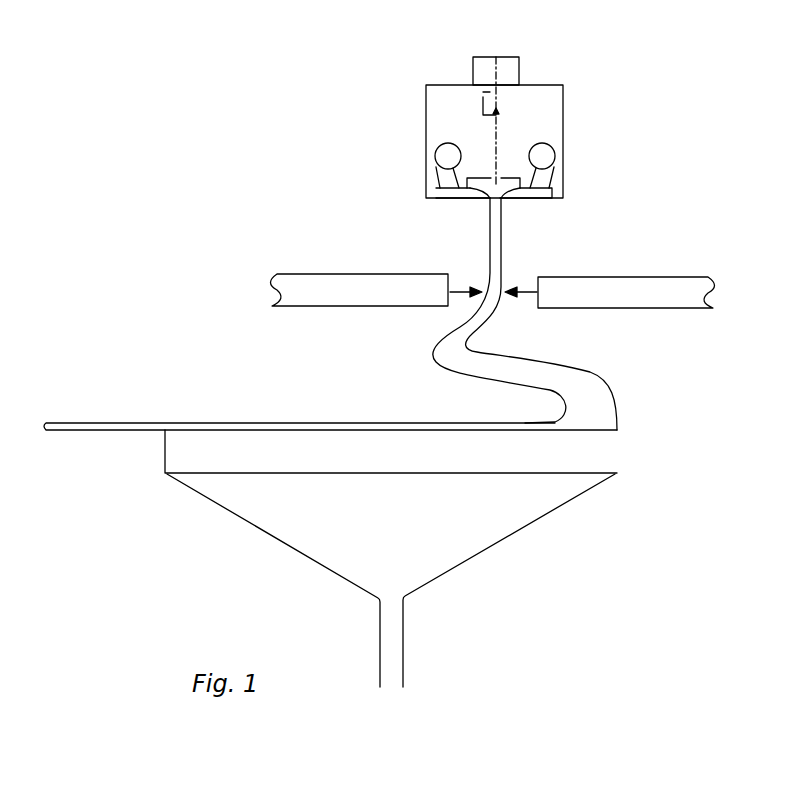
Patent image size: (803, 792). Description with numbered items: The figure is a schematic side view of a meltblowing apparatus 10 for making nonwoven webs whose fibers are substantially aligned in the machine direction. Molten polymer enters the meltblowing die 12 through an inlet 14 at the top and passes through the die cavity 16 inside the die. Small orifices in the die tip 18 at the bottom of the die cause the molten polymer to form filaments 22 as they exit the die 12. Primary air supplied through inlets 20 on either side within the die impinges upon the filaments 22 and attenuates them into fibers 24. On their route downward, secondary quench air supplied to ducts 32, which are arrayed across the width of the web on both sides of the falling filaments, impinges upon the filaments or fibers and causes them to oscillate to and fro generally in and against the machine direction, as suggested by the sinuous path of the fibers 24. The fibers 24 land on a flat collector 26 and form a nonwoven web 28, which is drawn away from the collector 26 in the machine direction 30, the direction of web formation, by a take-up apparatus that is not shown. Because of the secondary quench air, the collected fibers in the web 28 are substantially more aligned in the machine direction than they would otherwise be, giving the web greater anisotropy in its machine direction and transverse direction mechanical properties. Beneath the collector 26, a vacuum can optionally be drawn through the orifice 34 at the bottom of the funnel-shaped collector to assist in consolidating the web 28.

The meltblowing apparatus 10 is at (592, 58).
The meltblowing die 12 is at (564, 111).
The inlet 14 is at (497, 56).
The die cavity 16 is at (483, 105).
The die tip 18 is at (498, 201).
The inlets 20 is at (438, 156).
The filaments 22 is at (503, 257).
The fibers 24 is at (601, 377).
The flat collector 26 is at (605, 453).
The nonwoven web 28 is at (416, 422).
The machine direction 30 is at (123, 410).
The ducts 32 is at (363, 274).
The orifice 34 is at (393, 668).